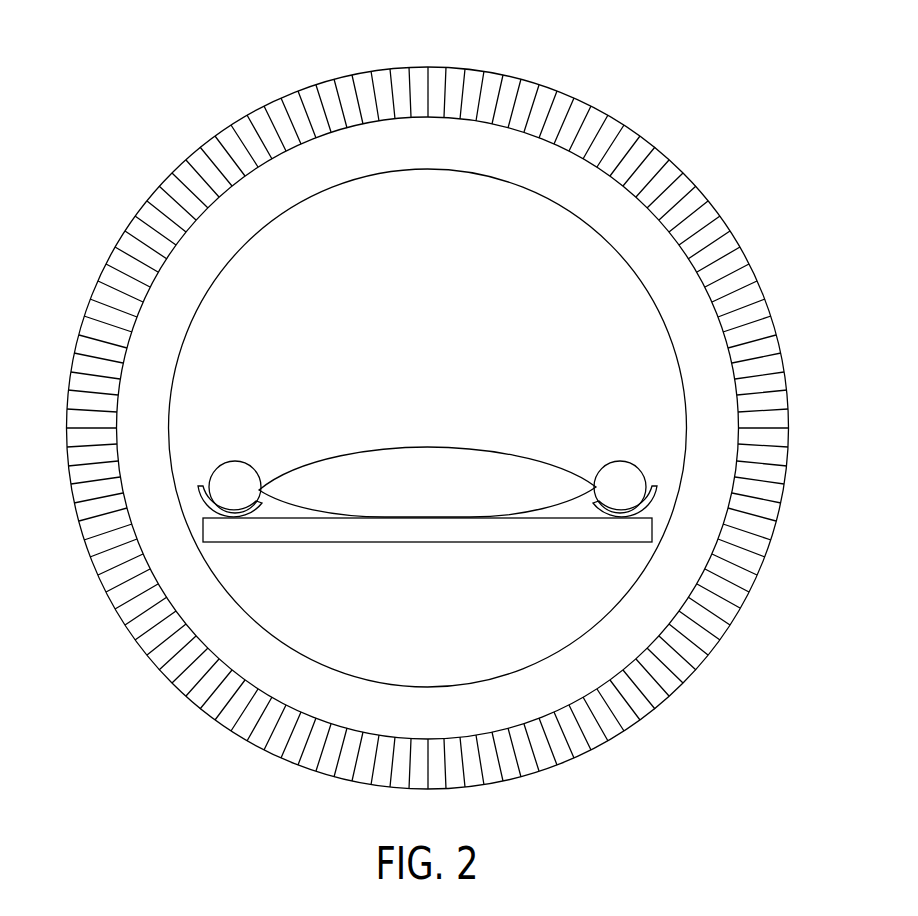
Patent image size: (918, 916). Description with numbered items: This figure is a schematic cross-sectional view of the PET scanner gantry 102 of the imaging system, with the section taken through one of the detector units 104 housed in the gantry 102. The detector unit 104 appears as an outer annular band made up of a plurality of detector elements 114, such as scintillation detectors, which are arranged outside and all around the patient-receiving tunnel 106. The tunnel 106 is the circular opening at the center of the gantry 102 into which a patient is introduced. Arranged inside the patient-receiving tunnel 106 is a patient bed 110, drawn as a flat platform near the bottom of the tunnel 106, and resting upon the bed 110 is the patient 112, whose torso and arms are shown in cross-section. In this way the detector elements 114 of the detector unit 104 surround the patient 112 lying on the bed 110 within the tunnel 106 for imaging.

The PET scanner gantry 102 is at (123, 91).
The detector unit 104 is at (698, 185).
The patient-receiving tunnel 106 is at (413, 285).
The patient bed 110 is at (412, 543).
The patient 112 is at (480, 448).
The detector elements 114 is at (566, 106).